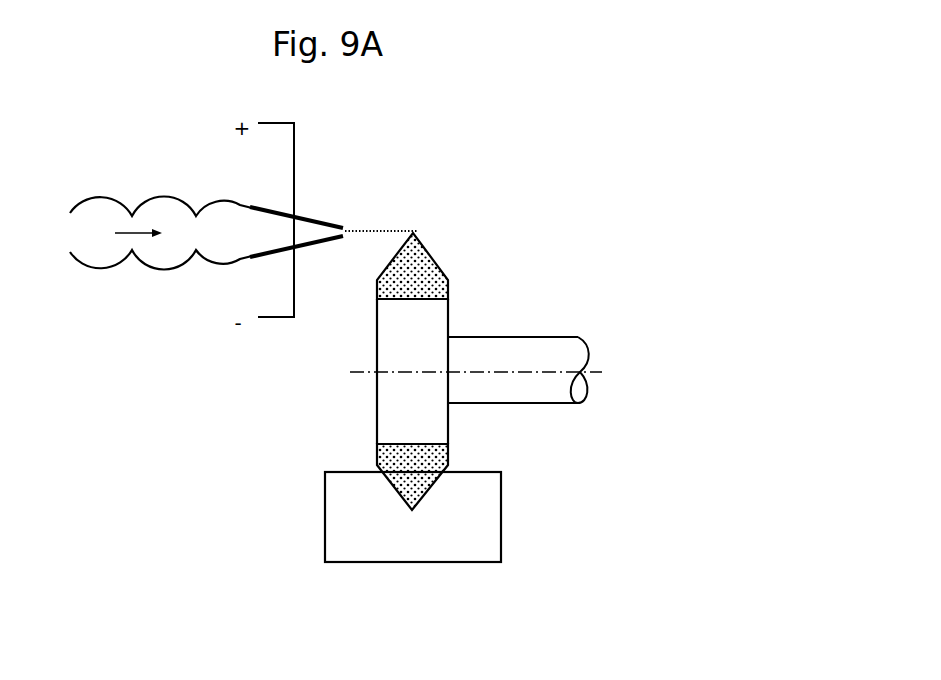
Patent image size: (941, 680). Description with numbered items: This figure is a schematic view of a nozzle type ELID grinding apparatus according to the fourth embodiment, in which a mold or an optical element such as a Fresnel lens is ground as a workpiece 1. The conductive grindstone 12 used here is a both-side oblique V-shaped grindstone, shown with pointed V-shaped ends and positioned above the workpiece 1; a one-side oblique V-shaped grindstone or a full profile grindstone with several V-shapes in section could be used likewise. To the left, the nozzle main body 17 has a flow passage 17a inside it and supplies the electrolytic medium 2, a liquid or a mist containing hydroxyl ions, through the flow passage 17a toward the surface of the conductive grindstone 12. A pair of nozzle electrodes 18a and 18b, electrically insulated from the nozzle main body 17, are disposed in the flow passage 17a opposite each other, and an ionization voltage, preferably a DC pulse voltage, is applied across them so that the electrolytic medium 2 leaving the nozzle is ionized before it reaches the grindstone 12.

The workpiece 1 is at (416, 545).
The electrolytic medium 2 is at (355, 230).
The conductive grindstone 12 is at (432, 275).
The nozzle main body 17 is at (75, 255).
The flow passage 17a is at (160, 250).
The nozzle electrode 18a is at (260, 208).
The nozzle electrode 18b is at (268, 255).